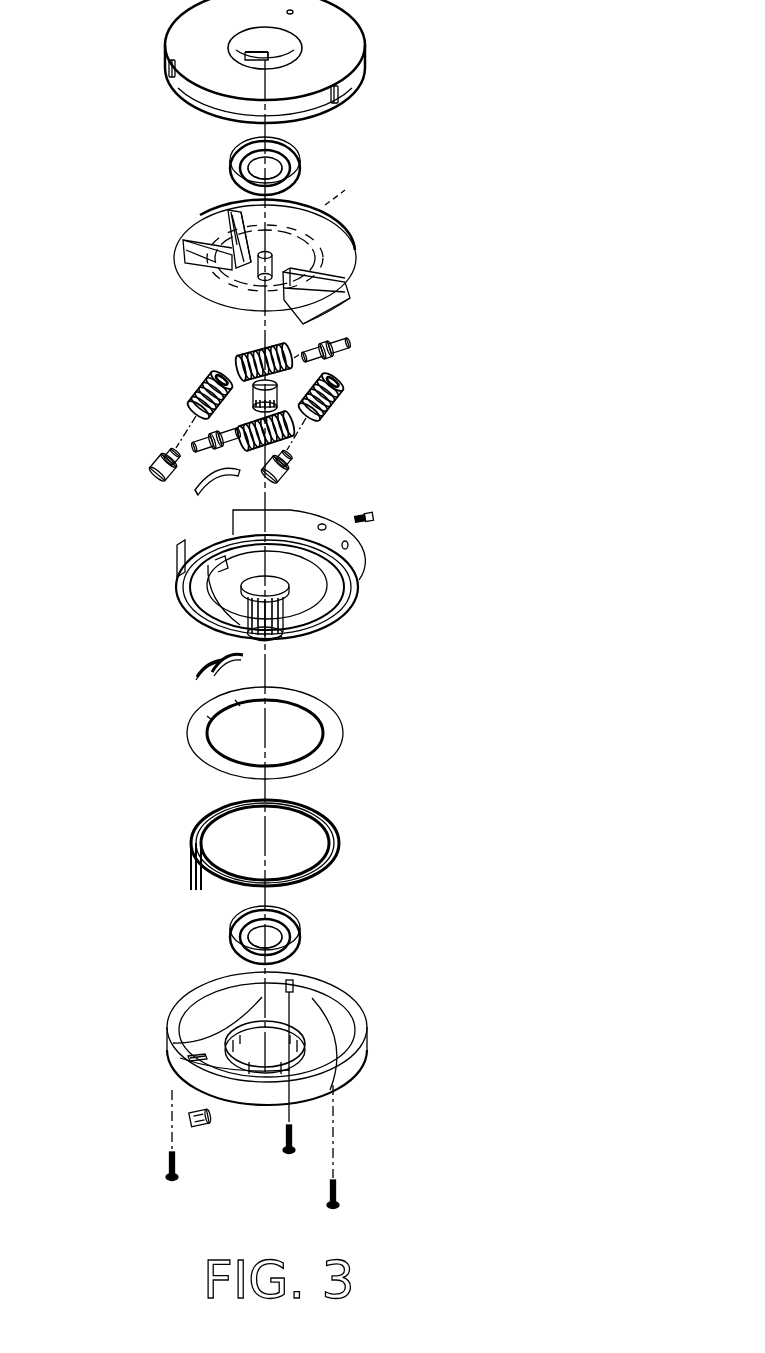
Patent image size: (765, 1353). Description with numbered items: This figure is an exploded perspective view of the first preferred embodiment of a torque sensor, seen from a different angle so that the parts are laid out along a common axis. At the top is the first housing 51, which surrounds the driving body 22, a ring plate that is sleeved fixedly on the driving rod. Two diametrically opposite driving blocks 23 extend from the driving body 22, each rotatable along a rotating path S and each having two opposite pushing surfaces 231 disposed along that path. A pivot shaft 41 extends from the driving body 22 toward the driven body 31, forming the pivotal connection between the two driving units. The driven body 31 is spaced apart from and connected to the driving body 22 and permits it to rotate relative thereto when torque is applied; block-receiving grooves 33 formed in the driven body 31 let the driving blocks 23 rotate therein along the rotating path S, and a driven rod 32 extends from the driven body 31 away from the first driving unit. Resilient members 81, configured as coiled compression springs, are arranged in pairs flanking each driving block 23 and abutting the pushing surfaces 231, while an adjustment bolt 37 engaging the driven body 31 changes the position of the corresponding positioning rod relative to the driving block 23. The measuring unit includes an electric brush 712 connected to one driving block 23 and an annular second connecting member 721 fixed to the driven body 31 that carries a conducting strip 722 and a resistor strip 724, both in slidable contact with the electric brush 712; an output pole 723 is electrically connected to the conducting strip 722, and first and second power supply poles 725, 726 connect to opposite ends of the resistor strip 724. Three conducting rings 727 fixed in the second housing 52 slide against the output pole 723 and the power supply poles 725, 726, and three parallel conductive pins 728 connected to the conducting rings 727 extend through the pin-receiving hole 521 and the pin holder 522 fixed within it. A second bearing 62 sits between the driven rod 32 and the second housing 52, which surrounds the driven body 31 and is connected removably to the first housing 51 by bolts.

The first housing 51 is at (348, 27).
The rotating path S is at (330, 203).
The driving body 22 is at (338, 237).
The driving blocks 23 is at (338, 288).
The pushing surfaces 231 is at (235, 213).
The pivot shaft 41 is at (275, 253).
The resilient members 81 is at (240, 362).
The electric brush 712 is at (222, 507).
The block-receiving grooves 33 is at (212, 536).
The driven body 31 is at (178, 580).
The driven rod 32 is at (253, 638).
The adjustment bolts 37 is at (372, 519).
The conducting strip 722 is at (200, 661).
The output pole 723 is at (200, 673).
The resistor strip 724 is at (218, 673).
The first power supply pole 725 is at (200, 690).
The second power supply pole 726 is at (243, 657).
The second connecting member 721 is at (335, 728).
The conducting rings 727 is at (330, 815).
The conductive pins 728 is at (195, 876).
The second bearing 62 is at (300, 919).
The second housing 52 is at (345, 1045).
The pin-receiving hole 521 is at (175, 1040).
The pin holder 522 is at (198, 1128).